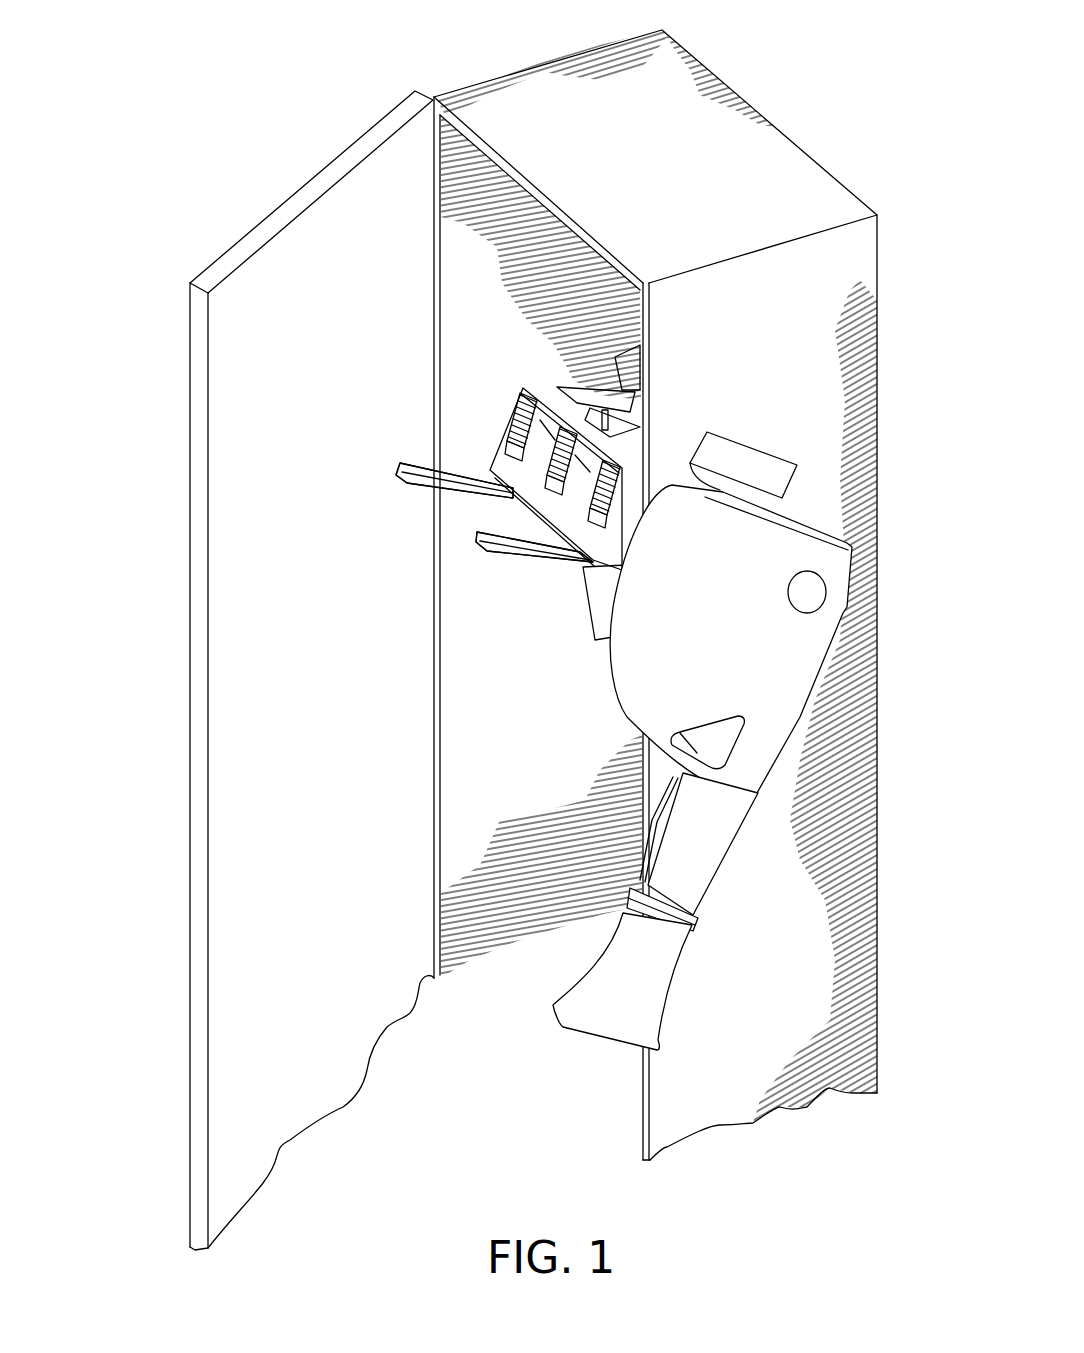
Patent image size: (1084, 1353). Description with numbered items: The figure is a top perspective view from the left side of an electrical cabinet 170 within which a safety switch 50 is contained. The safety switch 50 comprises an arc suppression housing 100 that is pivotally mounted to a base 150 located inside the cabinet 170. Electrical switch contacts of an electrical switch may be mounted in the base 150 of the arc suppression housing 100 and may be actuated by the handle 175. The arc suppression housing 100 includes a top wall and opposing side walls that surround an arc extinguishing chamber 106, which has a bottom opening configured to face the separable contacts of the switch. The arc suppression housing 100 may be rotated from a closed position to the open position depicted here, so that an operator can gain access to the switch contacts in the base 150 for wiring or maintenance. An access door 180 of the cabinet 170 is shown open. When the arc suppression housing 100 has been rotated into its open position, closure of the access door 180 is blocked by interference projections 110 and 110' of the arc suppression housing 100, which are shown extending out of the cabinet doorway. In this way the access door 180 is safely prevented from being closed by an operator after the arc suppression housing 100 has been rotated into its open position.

The safety switch 50 is at (472, 600).
The arc suppression housing 100 is at (495, 328).
The arc extinguishing chamber 106 is at (512, 416).
The interference projection 110 is at (393, 442).
The interference projection 110' is at (445, 531).
The base 150 is at (588, 617).
The electrical cabinet 170 is at (802, 150).
The handle 175 is at (858, 505).
The access door 180 is at (190, 737).